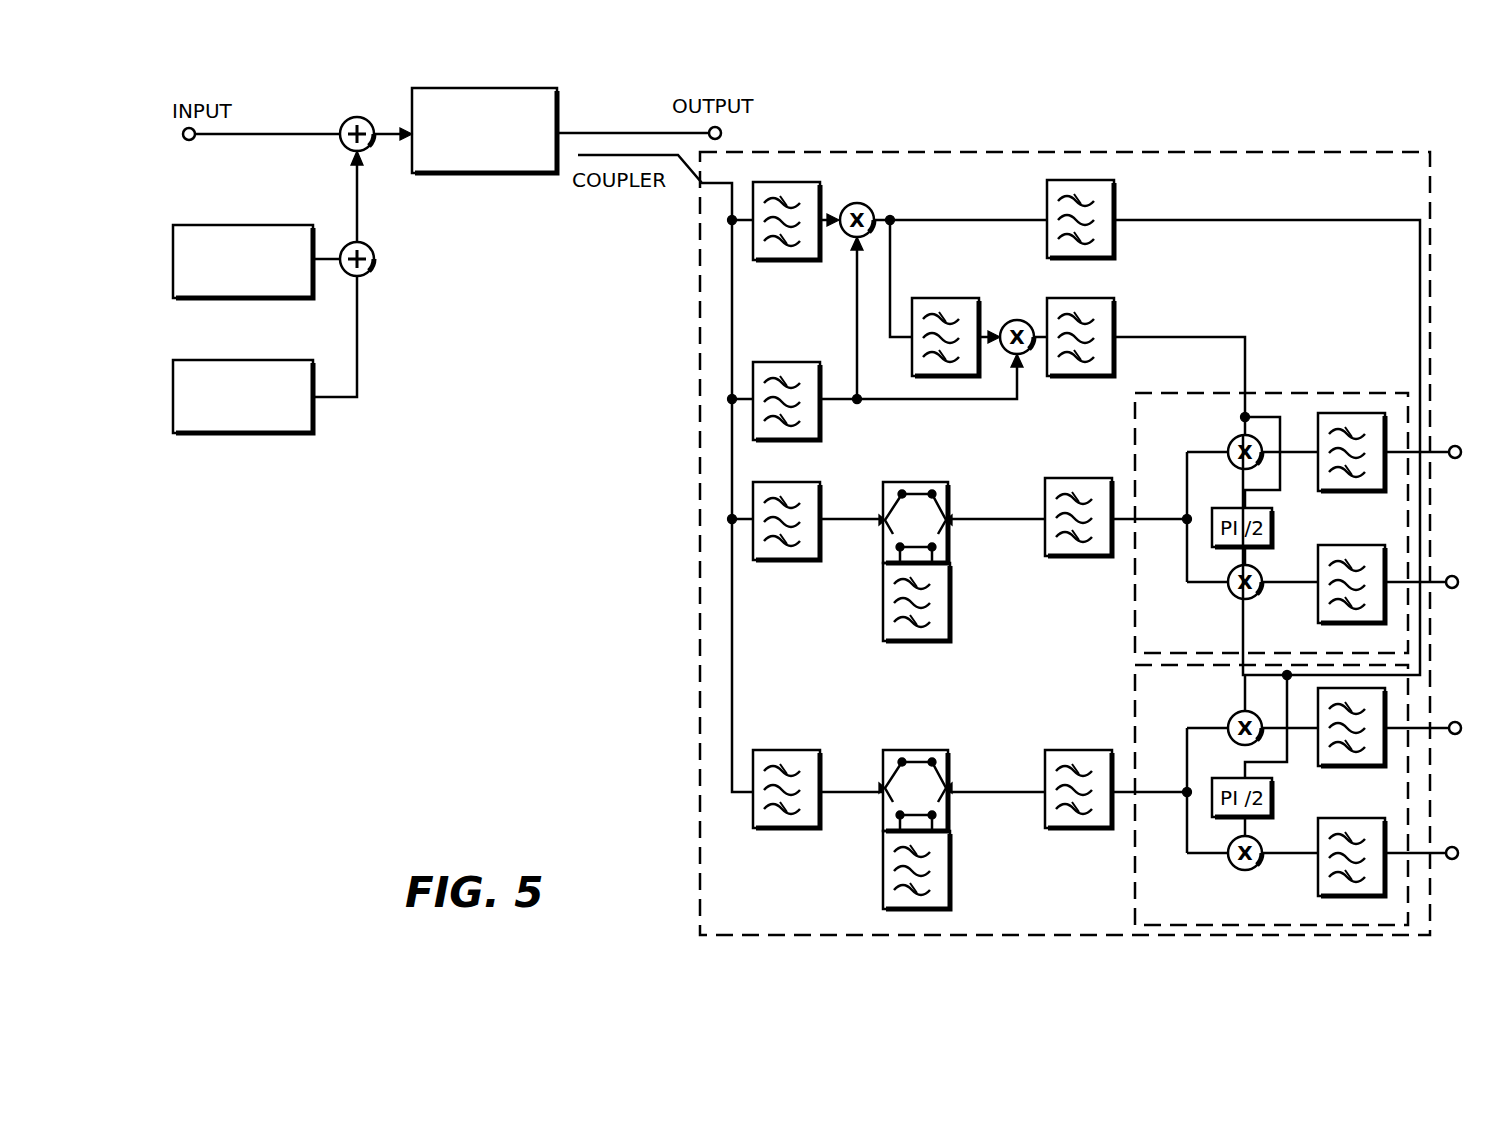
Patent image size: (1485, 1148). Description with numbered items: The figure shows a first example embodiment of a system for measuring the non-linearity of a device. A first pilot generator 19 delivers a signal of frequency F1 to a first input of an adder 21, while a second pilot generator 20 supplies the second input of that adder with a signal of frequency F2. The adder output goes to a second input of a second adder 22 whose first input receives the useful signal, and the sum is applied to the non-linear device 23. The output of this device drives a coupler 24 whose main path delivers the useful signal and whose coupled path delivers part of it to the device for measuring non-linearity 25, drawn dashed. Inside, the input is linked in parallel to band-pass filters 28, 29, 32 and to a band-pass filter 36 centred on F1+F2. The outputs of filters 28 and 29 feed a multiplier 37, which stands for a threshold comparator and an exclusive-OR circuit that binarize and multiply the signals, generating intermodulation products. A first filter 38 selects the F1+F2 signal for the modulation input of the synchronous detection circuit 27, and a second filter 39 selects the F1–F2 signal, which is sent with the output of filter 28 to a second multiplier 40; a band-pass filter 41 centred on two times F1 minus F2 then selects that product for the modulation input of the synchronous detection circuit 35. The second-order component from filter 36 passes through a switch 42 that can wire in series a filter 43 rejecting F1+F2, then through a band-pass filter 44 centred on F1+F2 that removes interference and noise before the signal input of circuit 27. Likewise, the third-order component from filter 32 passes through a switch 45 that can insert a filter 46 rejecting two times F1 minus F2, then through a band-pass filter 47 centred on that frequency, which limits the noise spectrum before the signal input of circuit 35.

The first pilot generator 19 is at (268, 225).
The second pilot generator 20 is at (258, 435).
The adder 21 is at (374, 265).
The second adder 22 is at (350, 118).
The non-linear device 23 is at (518, 176).
The coupler 24 is at (616, 155).
The device for measuring non-linearity 25 is at (1203, 152).
The synchronous detection circuit 27 is at (1135, 878).
The band-pass filter 28 is at (770, 362).
The band-pass filter 29 is at (823, 193).
The band-pass filter 32 is at (822, 543).
The synchronous detection circuit 35 is at (1325, 393).
The band-pass filter 36 is at (792, 750).
The multiplier 37 is at (846, 237).
The first filter 38 is at (1115, 193).
The second filter 39 is at (977, 298).
The second multiplier 40 is at (1017, 320).
The band-pass filter 41 is at (1115, 308).
The switch 42 is at (913, 750).
The filter 43 is at (950, 887).
The band-pass filter 44 is at (1050, 750).
The switch 45 is at (893, 482).
The filter 46 is at (950, 615).
The band-pass filter 47 is at (1068, 478).